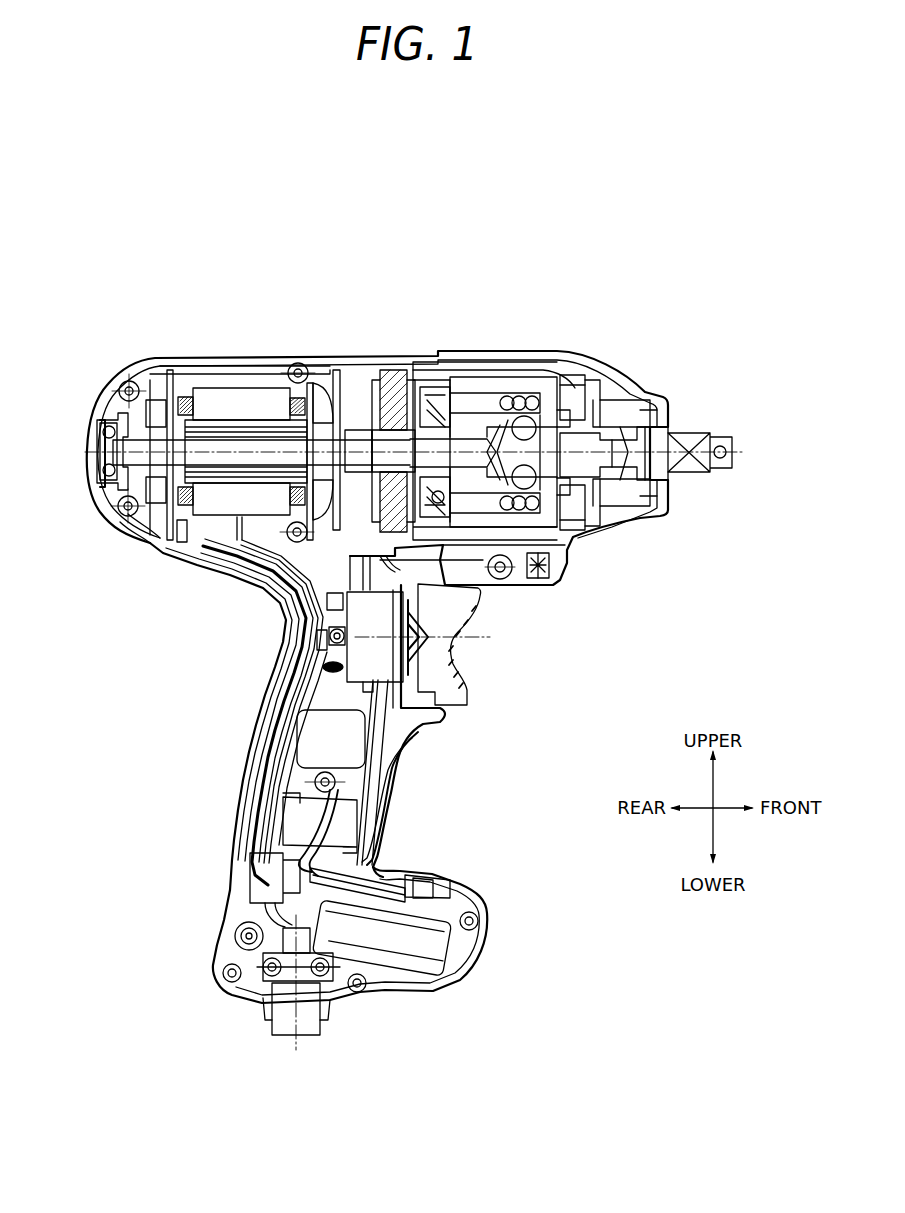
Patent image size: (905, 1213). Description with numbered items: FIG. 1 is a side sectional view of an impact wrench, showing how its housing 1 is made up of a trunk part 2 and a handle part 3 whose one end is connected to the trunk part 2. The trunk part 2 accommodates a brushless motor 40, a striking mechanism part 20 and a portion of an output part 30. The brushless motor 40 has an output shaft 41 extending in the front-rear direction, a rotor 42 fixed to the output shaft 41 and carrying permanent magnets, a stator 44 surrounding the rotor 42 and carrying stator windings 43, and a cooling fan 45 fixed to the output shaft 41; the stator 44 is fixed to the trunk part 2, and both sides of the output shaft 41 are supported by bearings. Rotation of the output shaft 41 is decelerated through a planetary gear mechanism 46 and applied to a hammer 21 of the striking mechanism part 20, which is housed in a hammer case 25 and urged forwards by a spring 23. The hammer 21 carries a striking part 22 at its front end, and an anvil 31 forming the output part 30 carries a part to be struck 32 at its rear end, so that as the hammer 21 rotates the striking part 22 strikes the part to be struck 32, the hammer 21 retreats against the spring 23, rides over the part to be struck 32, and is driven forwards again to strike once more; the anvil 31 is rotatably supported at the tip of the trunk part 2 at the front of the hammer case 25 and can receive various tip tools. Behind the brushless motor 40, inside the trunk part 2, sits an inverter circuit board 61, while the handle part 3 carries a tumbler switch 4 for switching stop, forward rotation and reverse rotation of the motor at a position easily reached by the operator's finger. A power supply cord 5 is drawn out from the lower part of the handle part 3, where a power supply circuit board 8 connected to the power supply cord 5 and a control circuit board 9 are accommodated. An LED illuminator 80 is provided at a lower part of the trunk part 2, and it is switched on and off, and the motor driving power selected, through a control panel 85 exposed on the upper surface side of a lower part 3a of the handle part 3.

The housing 1 is at (215, 360).
The trunk part 2 is at (315, 357).
The handle part 3 is at (394, 810).
The lower part 3a is at (483, 905).
The tumbler switch 4 is at (470, 686).
The power supply cord 5 is at (322, 1027).
The power supply circuit board 8 is at (438, 937).
The control circuit board 9 is at (393, 865).
The striking mechanism part 20 is at (435, 388).
The hammer 21 is at (504, 380).
The striking part 22 is at (603, 360).
The spring 23 is at (463, 393).
The hammer case 25 is at (587, 535).
The output part 30 is at (608, 417).
The anvil 31 is at (620, 478).
The part to be struck 32 is at (568, 388).
The brushless motor 40 is at (261, 390).
The output shaft 41 is at (312, 443).
The rotor 42 is at (196, 550).
The stator windings 43 is at (183, 393).
The stator 44 is at (237, 388).
The cooling fan 45 is at (287, 594).
The planetary gear mechanism 46 is at (393, 387).
The inverter circuit board 61 is at (147, 537).
The LED illuminator 80 is at (545, 580).
The control panel 85 is at (437, 875).